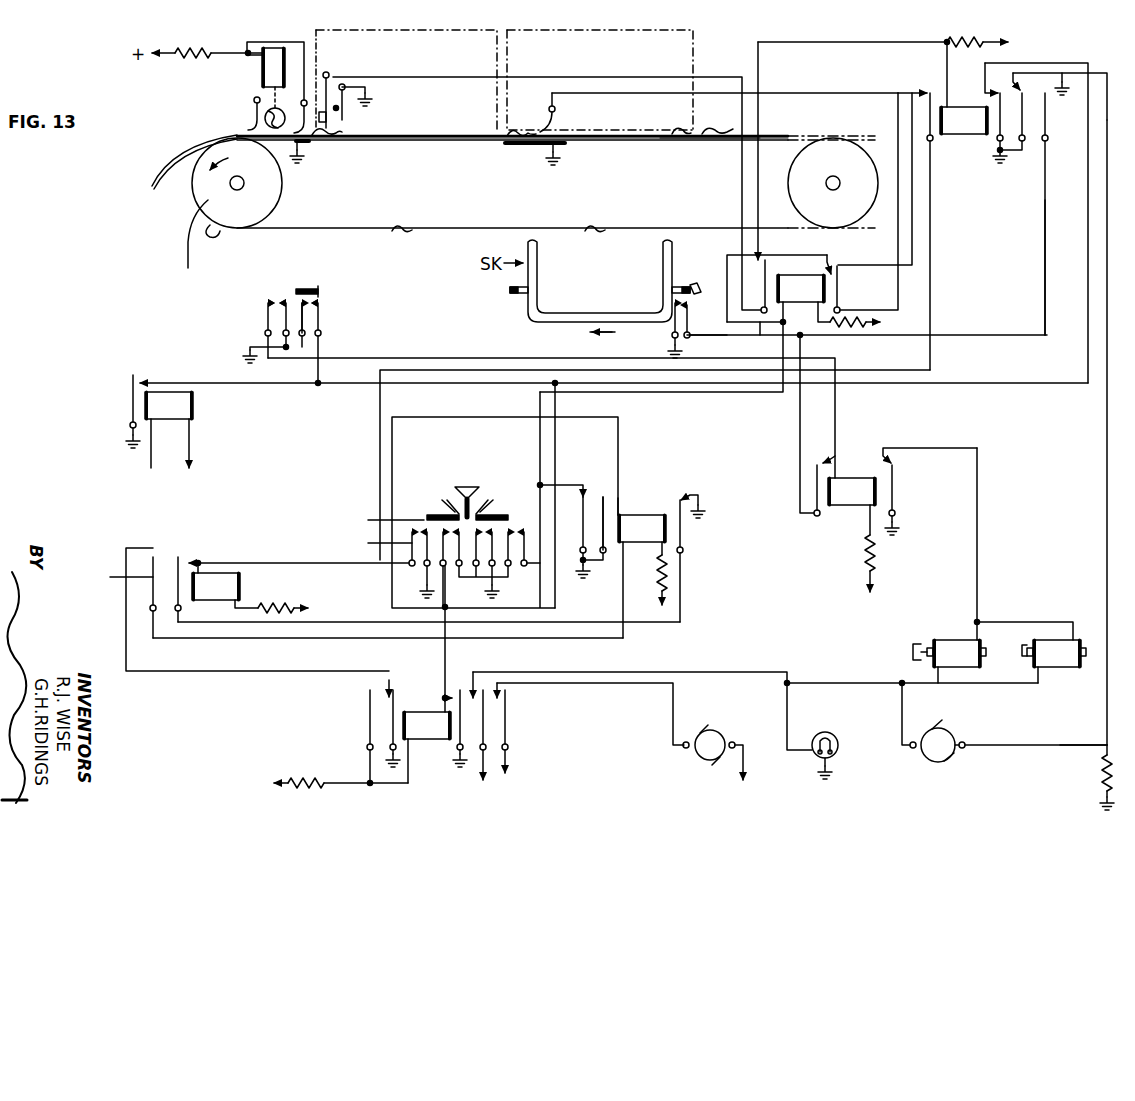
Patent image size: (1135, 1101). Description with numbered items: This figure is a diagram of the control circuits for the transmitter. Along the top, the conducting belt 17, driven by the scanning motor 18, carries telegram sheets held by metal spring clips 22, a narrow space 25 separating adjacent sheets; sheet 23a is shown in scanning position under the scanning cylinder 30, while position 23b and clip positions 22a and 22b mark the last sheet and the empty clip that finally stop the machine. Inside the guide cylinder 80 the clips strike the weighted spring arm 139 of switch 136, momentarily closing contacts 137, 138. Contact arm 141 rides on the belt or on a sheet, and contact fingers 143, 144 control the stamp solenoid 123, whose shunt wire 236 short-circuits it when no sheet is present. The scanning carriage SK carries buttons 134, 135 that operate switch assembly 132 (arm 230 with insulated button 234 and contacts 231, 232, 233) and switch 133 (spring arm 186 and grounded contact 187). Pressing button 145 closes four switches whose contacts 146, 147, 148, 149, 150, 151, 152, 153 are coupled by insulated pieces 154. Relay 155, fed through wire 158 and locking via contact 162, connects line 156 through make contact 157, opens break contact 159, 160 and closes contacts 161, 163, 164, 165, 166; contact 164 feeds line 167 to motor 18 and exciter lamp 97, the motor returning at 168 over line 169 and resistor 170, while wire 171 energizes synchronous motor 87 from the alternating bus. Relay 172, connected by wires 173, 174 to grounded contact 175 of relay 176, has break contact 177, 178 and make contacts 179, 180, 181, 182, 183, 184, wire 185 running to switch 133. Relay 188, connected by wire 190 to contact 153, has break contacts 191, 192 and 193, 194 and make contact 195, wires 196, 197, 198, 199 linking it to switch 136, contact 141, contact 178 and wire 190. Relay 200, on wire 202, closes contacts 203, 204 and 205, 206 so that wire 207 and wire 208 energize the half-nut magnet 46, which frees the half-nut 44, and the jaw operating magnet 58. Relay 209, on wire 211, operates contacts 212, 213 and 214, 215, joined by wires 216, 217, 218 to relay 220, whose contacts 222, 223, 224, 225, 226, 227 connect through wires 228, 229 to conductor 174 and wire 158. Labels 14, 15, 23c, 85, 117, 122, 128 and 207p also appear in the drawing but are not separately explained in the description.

The drive pulley 14 is at (197, 193).
The pulley 15 is at (850, 152).
The belt 17 is at (445, 228).
The scanning motor 18 is at (922, 760).
The metal spring clips 22 is at (219, 235).
The empty clip 22a is at (513, 130).
The preceding clip 22b is at (324, 139).
The message sheet 23a is at (697, 141).
The sheet position 23b is at (400, 140).
The web portion 23c is at (170, 162).
The narrow space 25 is at (494, 144).
The scanning cylinder 30 is at (628, 30).
The half-nut 44 is at (913, 646).
The half-nut magnet 46 is at (960, 642).
The jaw operating magnet 58 is at (1063, 670).
The guide cylinder 80 is at (470, 30).
The station 85 is at (507, 65).
The synchronous motor 87 is at (698, 759).
The exciter lamp 97 is at (835, 736).
The guide 117 is at (186, 248).
The clutch 122 is at (266, 111).
The solenoid 123 is at (262, 73).
The contact plate 128 is at (310, 146).
The switch assembly 132 is at (262, 323).
The switch 133 is at (668, 336).
The insulated button 134 is at (513, 296).
The insulated button 135 is at (688, 285).
The switch 136 is at (337, 68).
The insulated contact 137 is at (343, 84).
The insulated contact 138 is at (346, 110).
The spring arm 139 is at (325, 72).
The contact arm 141 is at (556, 118).
The contact finger 143 is at (253, 118).
The contact finger 144 is at (296, 160).
The push button 145 is at (467, 486).
The stationary contact 146 is at (374, 543).
The movable spring arm contact 147 is at (380, 520).
The stationary contact 148 is at (436, 517).
The movable spring arm contact 149 is at (452, 505).
The movable spring arm contact 150 is at (480, 505).
The stationary contact 151 is at (498, 578).
The movable spring arm contact 152 is at (510, 568).
The stationary contact 153 is at (532, 516).
The insulated pieces 154 is at (441, 513).
The relay 155 is at (428, 739).
The line 156 is at (425, 369).
The make contact 157 is at (372, 700).
The wire 158 is at (443, 654).
The break contact arm 159 is at (395, 702).
The back contact 160 is at (390, 692).
The make contact arm 161 is at (480, 688).
The make contact 162 is at (460, 688).
The contact arm 163 is at (480, 773).
The make contact 164 is at (477, 673).
The contact arm 165 is at (508, 722).
The make contact 166 is at (500, 690).
The line 167 is at (689, 672).
The connection 168 is at (1105, 745).
The line 169 is at (1105, 474).
The resistor 170 is at (1103, 777).
The wire 171 is at (632, 683).
The relay 172 is at (982, 130).
The wire 173 is at (878, 43).
The wire 174 is at (1088, 200).
The grounded contact 175 is at (135, 375).
The relay 176 is at (193, 405).
The break contact 177 is at (932, 90).
The break contact 178 is at (923, 92).
The make contact 179 is at (997, 142).
The make contact 180 is at (998, 93).
The make contact 181 is at (1022, 142).
The make contact 182 is at (1012, 74).
The make contact 183 is at (1047, 140).
The make contact 184 is at (1040, 88).
The wire 185 is at (1045, 242).
The spring arm 186 is at (689, 320).
The contact 187 is at (671, 318).
The relay 188 is at (797, 305).
The wire 190 is at (710, 393).
The contact arm 191 is at (772, 265).
The break contact 192 is at (760, 268).
The movable arm 193 is at (839, 291).
The break contact 194 is at (840, 266).
The make contact 195 is at (834, 262).
The wire 196 is at (468, 78).
The wire 197 is at (848, 93).
The wire 198 is at (932, 216).
The wire 199 is at (760, 337).
The relay 200 is at (846, 508).
The wire 202 is at (350, 358).
The make contact 203 is at (835, 450).
The movable contact 204 is at (812, 493).
The make contact 205 is at (887, 463).
The movable contact 206 is at (896, 490).
The wire 207 is at (800, 430).
The conductor 207 prime 207p is at (803, 338).
The wire 208 is at (979, 523).
The relay 209 is at (225, 572).
The wire 211 is at (286, 563).
The make contact 212 is at (202, 549).
The movable contact 213 is at (177, 556).
The make contact 214 is at (153, 553).
The movable contact 215 is at (115, 578).
The wire 216 is at (230, 624).
The wire 217 is at (262, 672).
The wire 218 is at (270, 640).
The relay 220 is at (640, 510).
The movable contact 222 is at (585, 480).
The make contact 223 is at (603, 496).
The movable contact 224 is at (605, 556).
The make contact 225 is at (618, 500).
The movable break contact 226 is at (684, 538).
The break contact 227 is at (706, 497).
The wire 228 is at (558, 408).
The wire 229 is at (440, 418).
The spring arm contact 230 is at (322, 304).
The contact 231 is at (306, 324).
The spring arm contact 232 is at (281, 294).
The contact 233 is at (266, 303).
The insulated button 234 is at (302, 287).
The shunt wire 236 is at (266, 43).